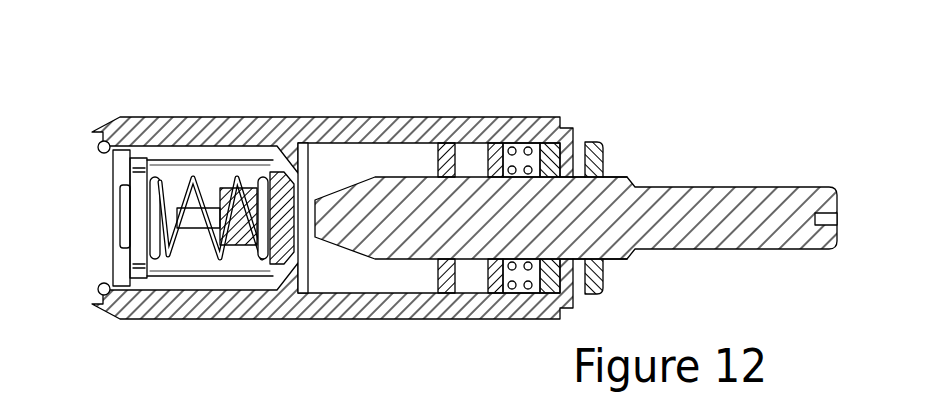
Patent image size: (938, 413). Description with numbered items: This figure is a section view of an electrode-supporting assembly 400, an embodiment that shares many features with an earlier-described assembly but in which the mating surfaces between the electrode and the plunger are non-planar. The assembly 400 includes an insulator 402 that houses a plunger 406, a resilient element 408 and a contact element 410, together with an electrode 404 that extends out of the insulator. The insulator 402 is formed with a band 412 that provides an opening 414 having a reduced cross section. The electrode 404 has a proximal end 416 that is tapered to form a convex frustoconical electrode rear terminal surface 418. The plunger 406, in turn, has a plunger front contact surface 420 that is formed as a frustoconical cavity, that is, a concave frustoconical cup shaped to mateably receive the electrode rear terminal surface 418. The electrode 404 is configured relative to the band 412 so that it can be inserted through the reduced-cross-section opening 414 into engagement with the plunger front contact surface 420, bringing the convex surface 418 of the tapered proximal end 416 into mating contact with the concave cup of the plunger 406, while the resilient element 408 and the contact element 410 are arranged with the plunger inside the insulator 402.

The electrode-supporting assembly 400 is at (644, 127).
The insulator 402 is at (500, 117).
The electrode 404 is at (745, 171).
The plunger 406 is at (254, 180).
The resilient element 408 is at (193, 180).
The contact element 410 is at (125, 225).
The band 412 is at (292, 258).
The opening 414 is at (298, 262).
The proximal end 416 is at (357, 258).
The electrode rear terminal surface 418 is at (339, 190).
The plunger front contact surface 420 is at (287, 152).